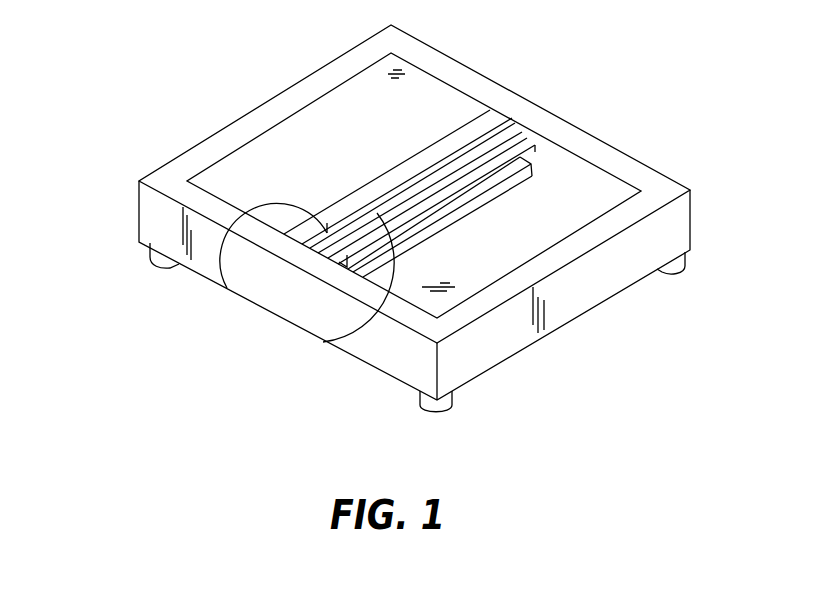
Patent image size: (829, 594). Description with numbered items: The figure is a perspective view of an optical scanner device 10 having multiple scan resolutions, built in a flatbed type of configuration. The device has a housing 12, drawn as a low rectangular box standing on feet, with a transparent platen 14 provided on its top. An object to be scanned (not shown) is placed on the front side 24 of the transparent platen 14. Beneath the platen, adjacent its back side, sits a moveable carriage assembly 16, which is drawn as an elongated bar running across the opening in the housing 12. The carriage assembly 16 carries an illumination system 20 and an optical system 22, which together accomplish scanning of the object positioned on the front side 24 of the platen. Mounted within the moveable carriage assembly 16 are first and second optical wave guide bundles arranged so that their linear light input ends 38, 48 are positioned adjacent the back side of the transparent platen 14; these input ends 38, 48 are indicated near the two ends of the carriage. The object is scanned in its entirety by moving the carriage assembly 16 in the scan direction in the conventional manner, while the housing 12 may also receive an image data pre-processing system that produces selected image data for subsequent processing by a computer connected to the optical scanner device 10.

The optical scanner device 10 is at (188, 82).
The housing 12 is at (140, 207).
The transparent platen 14 is at (607, 213).
The moveable carriage assembly 16 is at (525, 181).
The illumination system 20 is at (455, 133).
The optical system 22 is at (490, 155).
The front side of transparent platen 24 is at (348, 157).
The linear light input end of first optical wave guide bundle 38 is at (227, 288).
The linear light input end of second optical wave guide bundle 48 is at (323, 342).